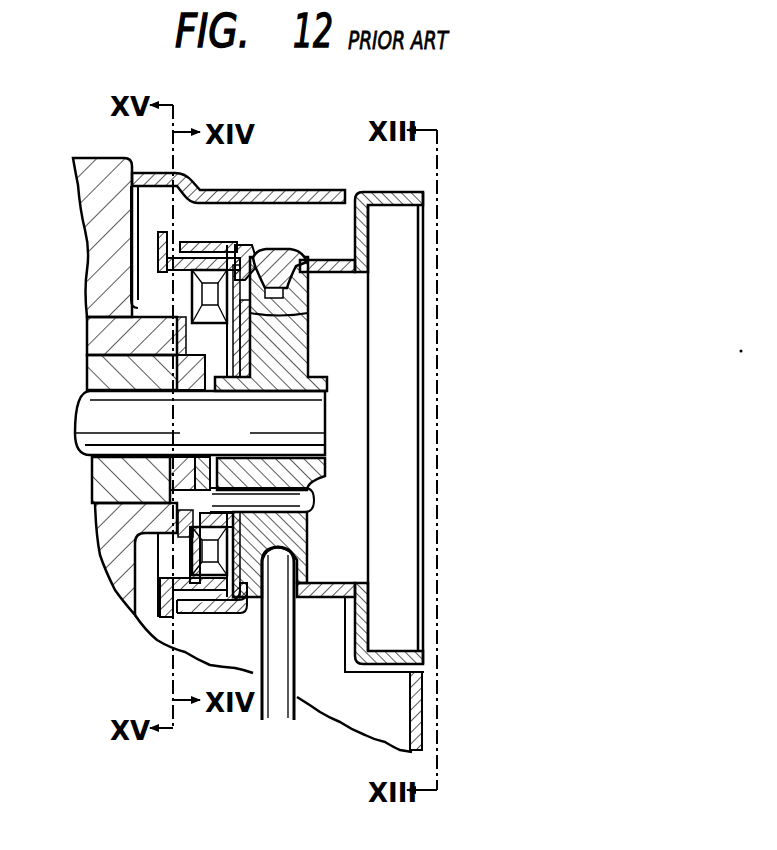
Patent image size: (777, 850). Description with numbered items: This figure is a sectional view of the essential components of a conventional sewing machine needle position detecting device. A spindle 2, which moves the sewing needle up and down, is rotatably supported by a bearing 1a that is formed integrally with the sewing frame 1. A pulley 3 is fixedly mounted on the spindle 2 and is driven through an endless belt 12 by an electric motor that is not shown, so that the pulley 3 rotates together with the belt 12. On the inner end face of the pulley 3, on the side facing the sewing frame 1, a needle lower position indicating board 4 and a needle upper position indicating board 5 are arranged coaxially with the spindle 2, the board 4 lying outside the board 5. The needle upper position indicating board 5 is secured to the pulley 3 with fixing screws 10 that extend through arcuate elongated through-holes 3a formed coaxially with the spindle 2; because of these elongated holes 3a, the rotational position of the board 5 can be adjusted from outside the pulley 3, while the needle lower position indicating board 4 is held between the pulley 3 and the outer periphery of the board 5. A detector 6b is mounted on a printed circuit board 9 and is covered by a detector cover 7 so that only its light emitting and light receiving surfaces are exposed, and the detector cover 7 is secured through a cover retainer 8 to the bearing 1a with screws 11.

The sewing frame 1 is at (108, 550).
The bearing 1a is at (105, 482).
The spindle 2 is at (85, 436).
The pulley 3 is at (400, 268).
The arcuate elongated through-holes 3a is at (300, 540).
The needle lower position indicating board 4 is at (270, 310).
The needle upper position indicating board 5 is at (255, 352).
The detector 6b is at (238, 250).
The detector cover 7 is at (150, 250).
The cover retainer 8 is at (150, 322).
The printed circuit board 9 is at (200, 283).
The fixing screws 10 is at (297, 501).
The screws 11 is at (150, 358).
The endless belt 12 is at (290, 262).